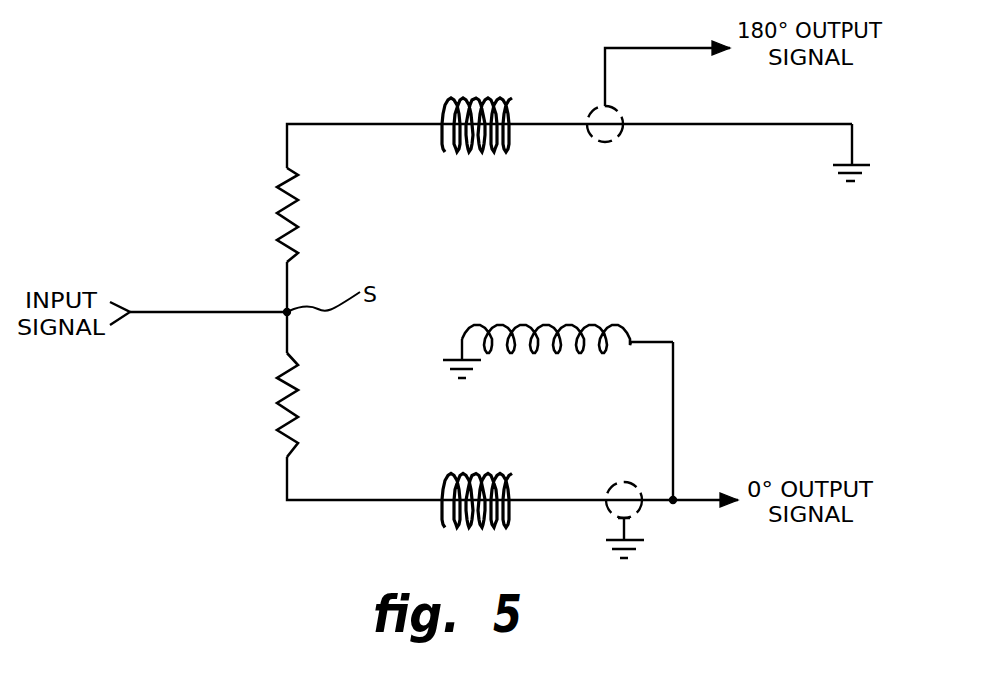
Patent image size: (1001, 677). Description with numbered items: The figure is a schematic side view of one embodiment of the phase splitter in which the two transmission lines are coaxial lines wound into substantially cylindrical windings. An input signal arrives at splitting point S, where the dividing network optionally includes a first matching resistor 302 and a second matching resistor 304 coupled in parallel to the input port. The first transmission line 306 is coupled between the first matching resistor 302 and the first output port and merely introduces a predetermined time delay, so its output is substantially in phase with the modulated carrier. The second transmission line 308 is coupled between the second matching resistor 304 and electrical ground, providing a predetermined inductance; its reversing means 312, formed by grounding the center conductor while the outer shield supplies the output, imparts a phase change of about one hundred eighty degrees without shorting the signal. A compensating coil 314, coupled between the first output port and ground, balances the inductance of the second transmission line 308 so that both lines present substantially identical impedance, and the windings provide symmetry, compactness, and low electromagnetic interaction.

The first matching resistor 302 is at (285, 417).
The second matching resistor 304 is at (285, 199).
The first transmission line 306 is at (487, 472).
The second transmission line 308 is at (475, 97).
The reversing means 312 is at (620, 132).
The compensating coil 314 is at (572, 325).